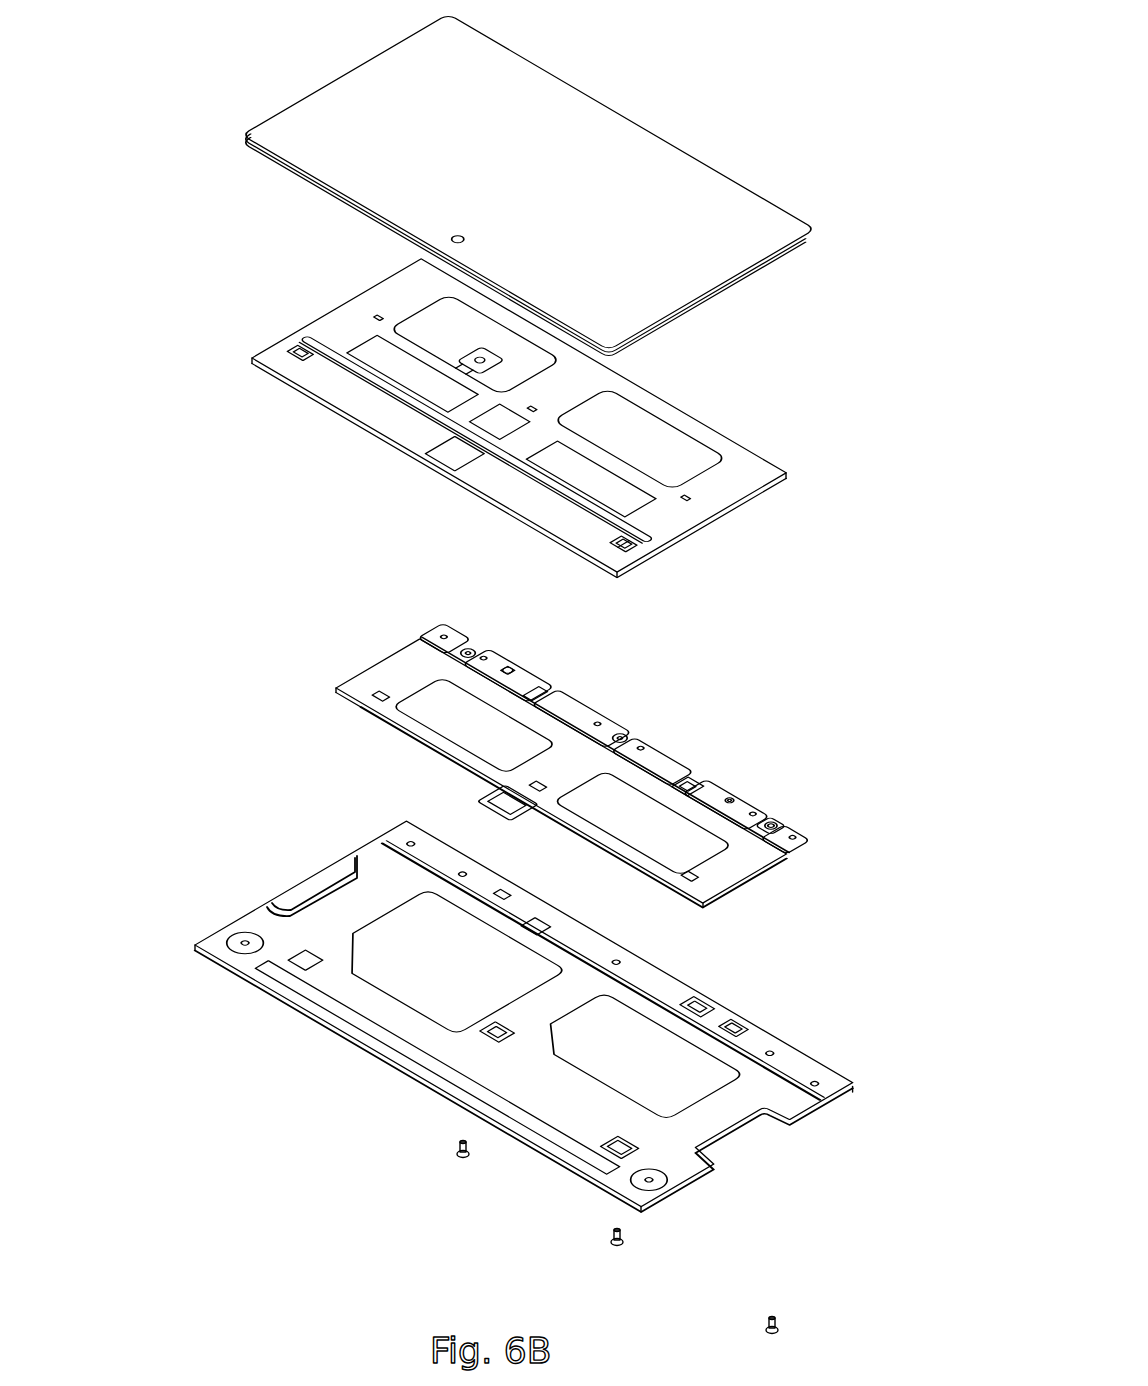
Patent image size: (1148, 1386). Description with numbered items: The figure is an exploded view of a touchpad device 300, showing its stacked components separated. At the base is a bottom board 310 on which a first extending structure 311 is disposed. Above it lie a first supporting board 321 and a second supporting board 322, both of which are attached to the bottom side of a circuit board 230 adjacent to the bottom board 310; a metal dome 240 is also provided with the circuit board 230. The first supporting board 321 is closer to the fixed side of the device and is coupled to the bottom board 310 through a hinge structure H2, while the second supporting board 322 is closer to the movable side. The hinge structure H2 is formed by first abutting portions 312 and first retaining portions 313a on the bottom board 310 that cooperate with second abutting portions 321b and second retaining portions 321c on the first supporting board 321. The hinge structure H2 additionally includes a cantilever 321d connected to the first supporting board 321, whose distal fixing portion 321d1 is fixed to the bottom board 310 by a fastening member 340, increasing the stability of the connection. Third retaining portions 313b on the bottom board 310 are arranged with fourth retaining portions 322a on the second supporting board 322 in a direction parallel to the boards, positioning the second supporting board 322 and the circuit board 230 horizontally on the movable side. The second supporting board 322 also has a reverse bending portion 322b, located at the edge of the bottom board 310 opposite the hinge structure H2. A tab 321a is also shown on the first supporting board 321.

The touchpad device 300 is at (237, 25).
The circuit board 230 is at (528, 193).
The metal dome 240 is at (449, 240).
The second supporting board 322 is at (519, 441).
The fourth retaining portion 322a is at (614, 542).
The reverse bending portion 322b is at (517, 520).
The first supporting board 321 is at (605, 765).
The tab 321a is at (493, 798).
The second abutting portion 321b is at (695, 777).
The second retaining portion 321c is at (730, 794).
The cantilever 321d is at (844, 798).
The fixing portion 321d1 is at (778, 809).
The bottom board 310 is at (543, 1018).
The first extending structure 311 is at (483, 1031).
The first abutting portion 312 is at (705, 1004).
The first retaining portion 313a is at (735, 1026).
The third retaining portion 313b is at (668, 1151).
The fastening member 340 is at (770, 1326).
The hinge structure H2 is at (143, 1091).